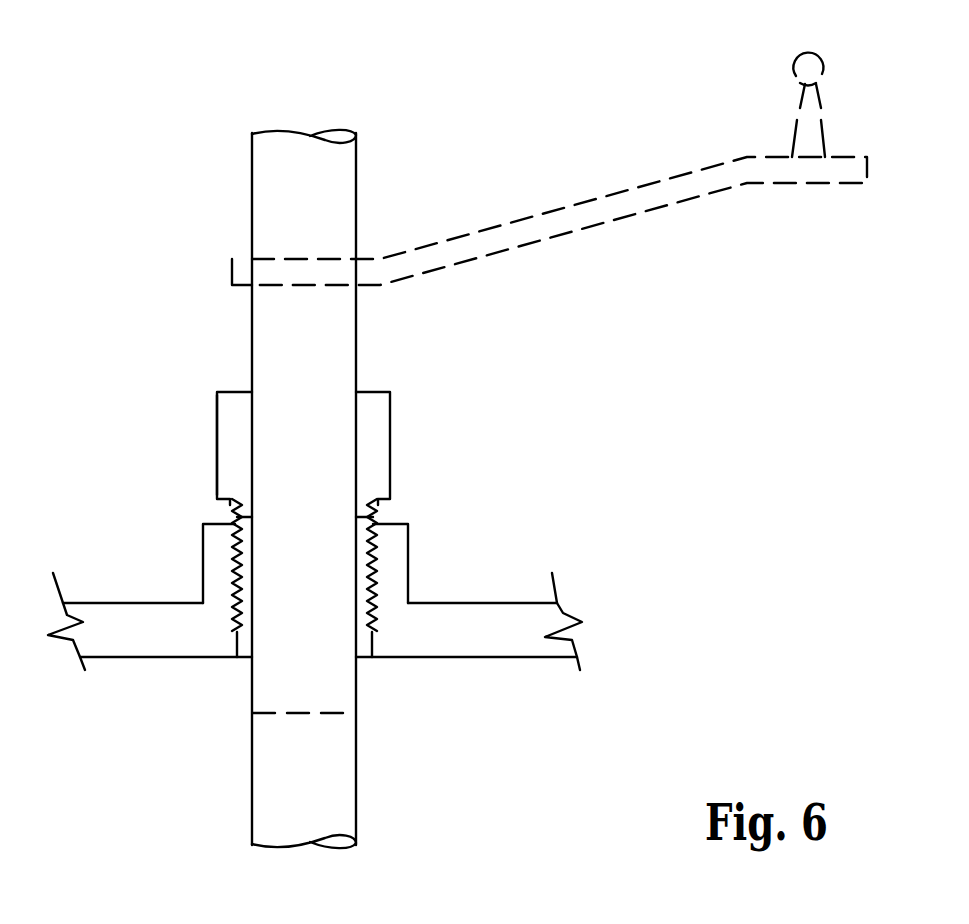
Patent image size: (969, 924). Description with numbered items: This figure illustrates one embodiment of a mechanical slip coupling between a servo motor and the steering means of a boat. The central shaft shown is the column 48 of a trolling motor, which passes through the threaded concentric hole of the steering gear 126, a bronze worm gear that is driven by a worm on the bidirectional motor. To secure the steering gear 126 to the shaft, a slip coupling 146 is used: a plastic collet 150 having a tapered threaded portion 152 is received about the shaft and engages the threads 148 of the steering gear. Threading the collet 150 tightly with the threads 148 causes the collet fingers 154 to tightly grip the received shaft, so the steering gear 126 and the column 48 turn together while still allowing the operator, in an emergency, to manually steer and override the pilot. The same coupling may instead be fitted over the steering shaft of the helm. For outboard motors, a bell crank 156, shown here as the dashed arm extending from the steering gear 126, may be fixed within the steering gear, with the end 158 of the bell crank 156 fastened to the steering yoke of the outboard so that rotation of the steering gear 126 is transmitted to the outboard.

The column 48 is at (357, 758).
The steering gear 126 is at (120, 657).
The slip coupling 146 is at (418, 428).
The threads 148 is at (245, 580).
The collet 150 is at (217, 440).
The tapered threaded portion 152 is at (363, 553).
The collet fingers 154 is at (370, 598).
The bell crank 156 is at (587, 200).
The end of bell crank 158 is at (798, 103).